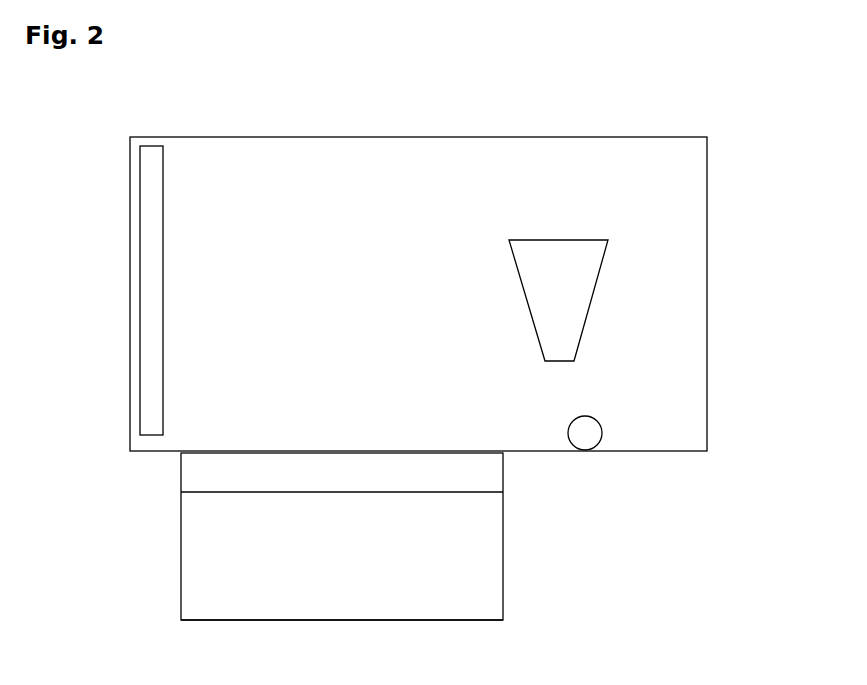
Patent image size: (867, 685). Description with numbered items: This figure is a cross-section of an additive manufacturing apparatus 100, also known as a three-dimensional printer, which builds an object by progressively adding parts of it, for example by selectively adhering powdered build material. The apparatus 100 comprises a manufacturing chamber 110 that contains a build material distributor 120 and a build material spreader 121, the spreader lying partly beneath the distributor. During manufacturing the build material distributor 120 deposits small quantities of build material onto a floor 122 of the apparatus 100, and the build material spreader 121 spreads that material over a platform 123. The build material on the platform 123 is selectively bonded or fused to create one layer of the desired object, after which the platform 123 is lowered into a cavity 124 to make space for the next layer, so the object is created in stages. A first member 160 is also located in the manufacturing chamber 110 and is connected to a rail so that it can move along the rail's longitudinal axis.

The additive manufacturing apparatus 100 is at (638, 103).
The manufacturing chamber 110 is at (341, 150).
The build material distributor 120 is at (531, 258).
The build material spreader 121 is at (585, 431).
The floor 122 is at (548, 451).
The platform 123 is at (492, 477).
The cavity 124 is at (490, 562).
The first member 160 is at (163, 250).